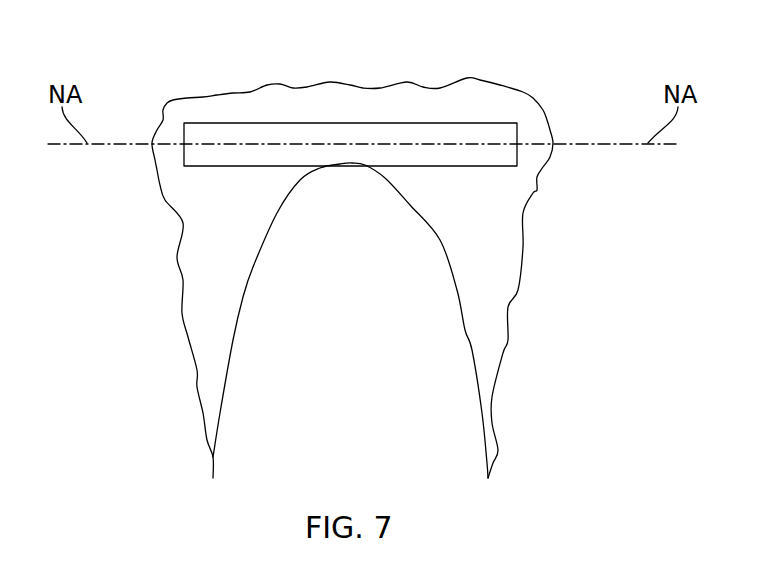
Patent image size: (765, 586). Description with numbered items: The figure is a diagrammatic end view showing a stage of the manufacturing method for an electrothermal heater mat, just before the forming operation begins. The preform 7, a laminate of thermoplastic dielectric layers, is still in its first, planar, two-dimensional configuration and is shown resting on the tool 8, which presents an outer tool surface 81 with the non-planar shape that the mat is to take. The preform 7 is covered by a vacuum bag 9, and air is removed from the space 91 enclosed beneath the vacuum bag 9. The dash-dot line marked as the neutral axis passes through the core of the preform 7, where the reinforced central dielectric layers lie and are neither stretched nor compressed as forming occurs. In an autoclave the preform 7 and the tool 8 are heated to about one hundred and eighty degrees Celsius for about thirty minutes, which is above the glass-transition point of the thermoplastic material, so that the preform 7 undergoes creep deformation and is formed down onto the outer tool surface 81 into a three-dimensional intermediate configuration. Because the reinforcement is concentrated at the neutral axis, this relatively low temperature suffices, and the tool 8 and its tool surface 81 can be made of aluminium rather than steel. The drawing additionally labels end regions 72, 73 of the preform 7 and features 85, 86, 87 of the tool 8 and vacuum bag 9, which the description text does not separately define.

The preform 7 is at (468, 138).
The first end portion of attachment 72 is at (230, 133).
The second end portion of attachment 73 is at (505, 136).
The tool 8 is at (462, 308).
The outer tool surface 81 is at (243, 292).
The cusp tip of tooth 85 is at (361, 165).
The first root of tooth 86 is at (222, 395).
The second root of tooth 87 is at (473, 352).
The vacuum bag 9 is at (537, 193).
The space 91 is at (495, 242).